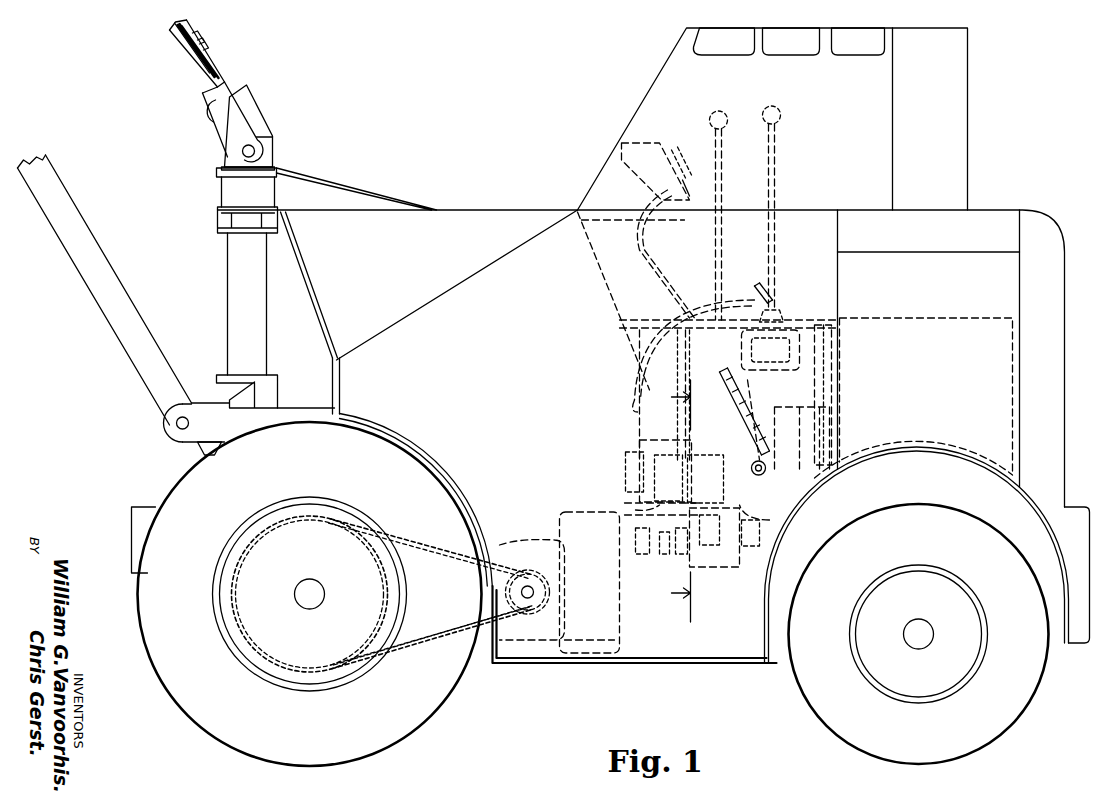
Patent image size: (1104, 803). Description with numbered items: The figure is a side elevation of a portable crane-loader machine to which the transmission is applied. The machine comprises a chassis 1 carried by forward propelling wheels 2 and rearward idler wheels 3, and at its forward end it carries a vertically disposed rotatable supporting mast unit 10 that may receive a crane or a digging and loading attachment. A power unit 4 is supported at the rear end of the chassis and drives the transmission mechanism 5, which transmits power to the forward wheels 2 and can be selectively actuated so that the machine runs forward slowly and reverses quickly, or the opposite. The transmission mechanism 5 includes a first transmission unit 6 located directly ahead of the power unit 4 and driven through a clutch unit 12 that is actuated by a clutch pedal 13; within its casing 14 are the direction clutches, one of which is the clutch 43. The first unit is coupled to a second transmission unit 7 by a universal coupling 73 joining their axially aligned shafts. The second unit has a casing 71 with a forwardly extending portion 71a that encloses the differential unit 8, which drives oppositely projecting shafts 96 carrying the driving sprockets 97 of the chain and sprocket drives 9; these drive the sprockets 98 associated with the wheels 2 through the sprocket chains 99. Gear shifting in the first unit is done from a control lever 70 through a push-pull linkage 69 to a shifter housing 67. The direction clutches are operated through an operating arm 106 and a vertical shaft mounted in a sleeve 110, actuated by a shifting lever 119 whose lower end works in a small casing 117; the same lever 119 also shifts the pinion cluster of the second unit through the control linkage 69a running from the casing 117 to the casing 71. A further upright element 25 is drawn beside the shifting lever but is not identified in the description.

The chassis 1 is at (658, 665).
The forward propelling wheels 2 is at (444, 682).
The rearward idler wheels 3 is at (1010, 703).
The power unit 4 is at (905, 318).
The transmission mechanism 5 is at (624, 476).
The first transmission unit 6 is at (733, 568).
The second transmission unit 7 is at (616, 644).
The differential unit 8 is at (534, 536).
The chain and sprocket 9 is at (423, 657).
The supporting mast unit 10 is at (263, 300).
The clutch unit 12 is at (765, 410).
The clutch pedal 13 is at (752, 298).
The casing 14 is at (770, 452).
The steering lever 25 is at (722, 178).
The clutch 43 is at (688, 492).
The shifter housing 67 is at (730, 541).
The push-pull linkage 69 is at (655, 250).
The control linkage 69a is at (637, 405).
The control lever 70 is at (690, 165).
The casing 71 is at (562, 522).
The forwardly extending portion 71a is at (510, 663).
The universal coupling 73 is at (658, 552).
The oppositely projecting shafts 96 is at (546, 586).
The driving sprockets 97 is at (546, 600).
The sprockets 98 is at (395, 588).
The sprocket chains 99 is at (445, 540).
The operating arm 106 is at (640, 442).
The sleeve 110 is at (680, 425).
The small casing 117 is at (750, 362).
The shifting lever 119 is at (776, 186).